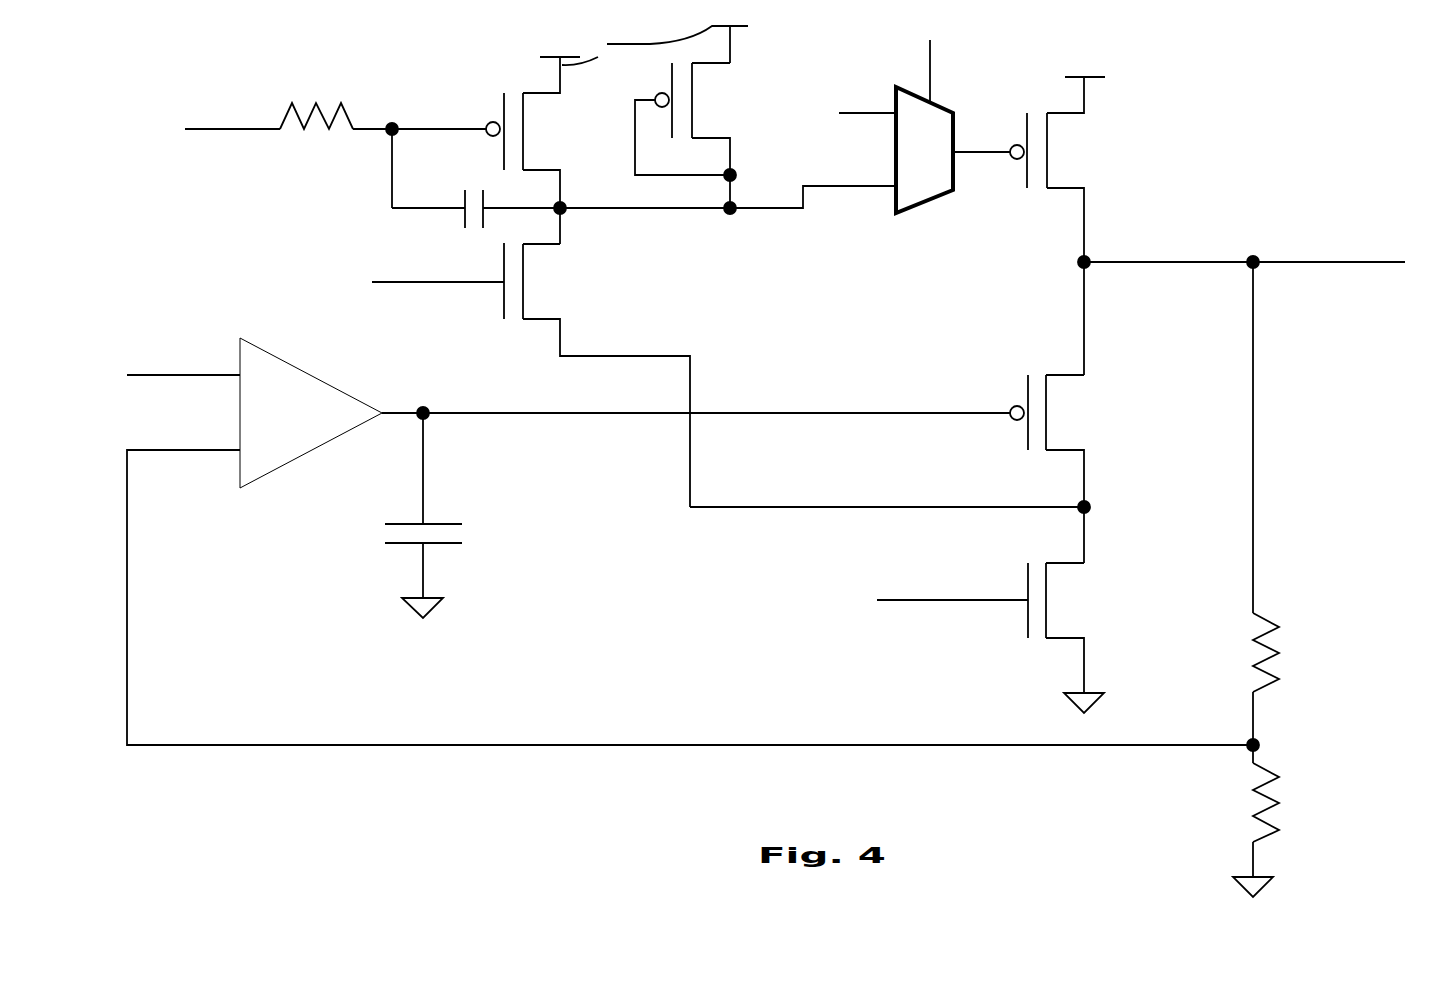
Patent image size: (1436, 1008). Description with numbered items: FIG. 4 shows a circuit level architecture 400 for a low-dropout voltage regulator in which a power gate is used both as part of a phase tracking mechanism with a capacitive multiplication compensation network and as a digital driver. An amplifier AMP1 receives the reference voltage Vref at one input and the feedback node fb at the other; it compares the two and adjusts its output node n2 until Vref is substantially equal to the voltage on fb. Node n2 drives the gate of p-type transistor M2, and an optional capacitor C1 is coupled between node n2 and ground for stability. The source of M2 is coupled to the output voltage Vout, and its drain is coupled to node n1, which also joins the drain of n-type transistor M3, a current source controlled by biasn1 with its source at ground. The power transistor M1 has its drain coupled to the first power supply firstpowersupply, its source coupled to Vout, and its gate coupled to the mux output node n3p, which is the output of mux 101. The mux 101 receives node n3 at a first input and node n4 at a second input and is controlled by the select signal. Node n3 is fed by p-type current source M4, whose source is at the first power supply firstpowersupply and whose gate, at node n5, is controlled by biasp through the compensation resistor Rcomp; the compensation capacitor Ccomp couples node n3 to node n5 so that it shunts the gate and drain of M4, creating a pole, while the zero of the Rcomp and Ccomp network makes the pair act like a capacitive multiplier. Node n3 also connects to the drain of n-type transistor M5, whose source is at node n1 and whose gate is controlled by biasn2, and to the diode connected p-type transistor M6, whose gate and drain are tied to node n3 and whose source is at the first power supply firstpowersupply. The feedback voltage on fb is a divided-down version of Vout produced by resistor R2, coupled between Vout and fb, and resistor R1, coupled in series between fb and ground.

The circuit level architecture 400 is at (141, 77).
The mux 101 is at (945, 158).
The p-type power transistor M1 is at (1057, 169).
The p-type transistor M2 is at (1055, 384).
The n-type transistor M3 is at (1066, 610).
The p-type transistor M4 is at (542, 132).
The n-type transistor M5 is at (597, 357).
The diode connected p-type transistor M6 is at (685, 117).
The resistor R1 is at (1276, 821).
The resistor R2 is at (1286, 503).
The compensation resistor Rcomp is at (335, 130).
The compensation capacitor Ccomp is at (476, 197).
The capacitor C1 is at (440, 515).
The amplifier AMP1 is at (331, 413).
The node n1 is at (890, 497).
The node n2 is at (713, 404).
The node n3 is at (725, 197).
The node n3' n3p is at (981, 139).
The node n4 is at (867, 98).
The node n5 is at (436, 155).
The bias voltage biasp is at (217, 111).
The bias voltage biasn1 is at (952, 585).
The bias voltage biasn2 is at (438, 268).
The select signal select is at (932, 70).
The reference voltage Vref is at (182, 360).
The output voltage Vout is at (1241, 267).
The feedback node fb is at (693, 600).
The first power supply firstpowersupply is at (580, 36).